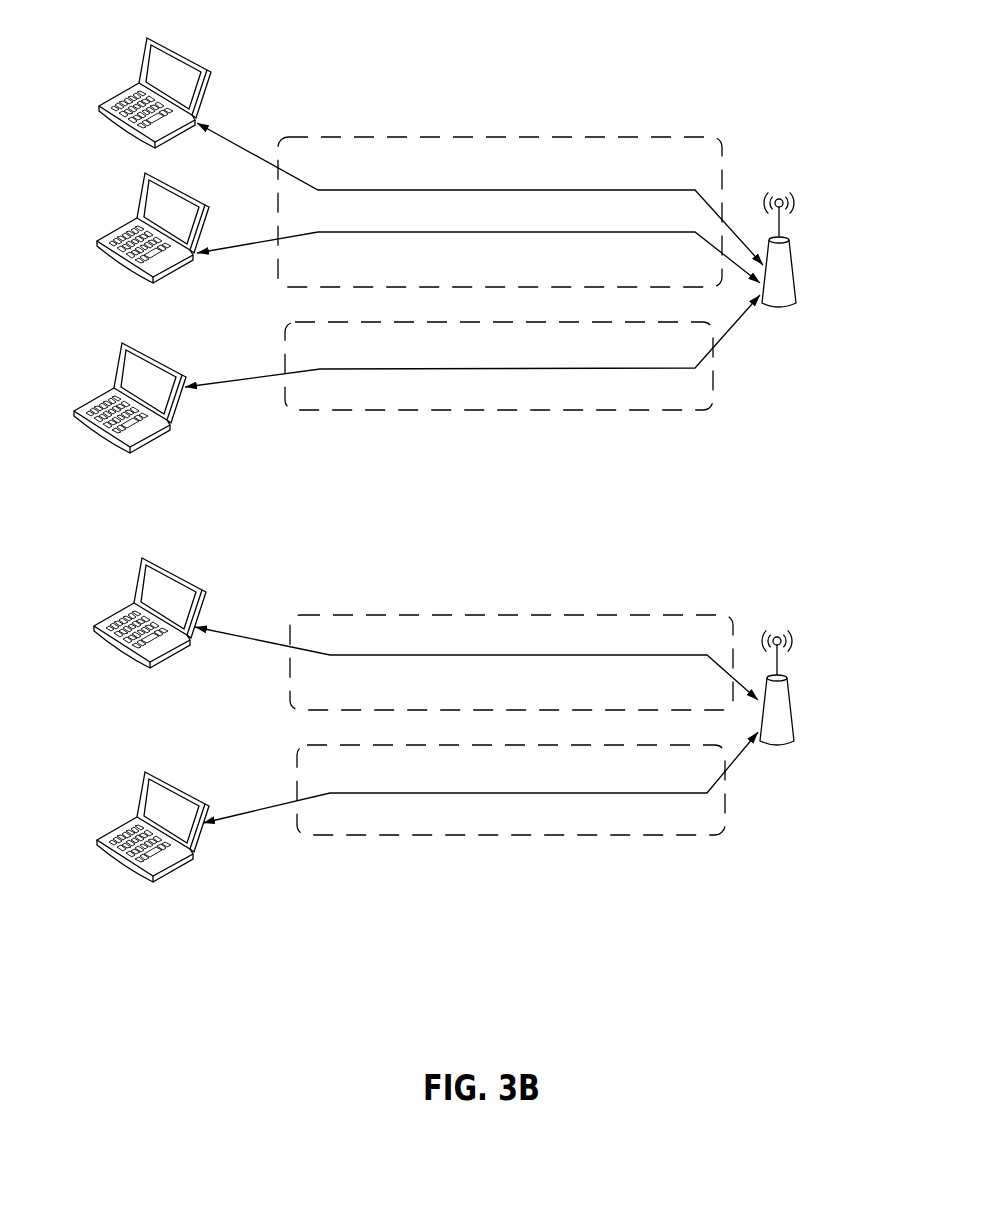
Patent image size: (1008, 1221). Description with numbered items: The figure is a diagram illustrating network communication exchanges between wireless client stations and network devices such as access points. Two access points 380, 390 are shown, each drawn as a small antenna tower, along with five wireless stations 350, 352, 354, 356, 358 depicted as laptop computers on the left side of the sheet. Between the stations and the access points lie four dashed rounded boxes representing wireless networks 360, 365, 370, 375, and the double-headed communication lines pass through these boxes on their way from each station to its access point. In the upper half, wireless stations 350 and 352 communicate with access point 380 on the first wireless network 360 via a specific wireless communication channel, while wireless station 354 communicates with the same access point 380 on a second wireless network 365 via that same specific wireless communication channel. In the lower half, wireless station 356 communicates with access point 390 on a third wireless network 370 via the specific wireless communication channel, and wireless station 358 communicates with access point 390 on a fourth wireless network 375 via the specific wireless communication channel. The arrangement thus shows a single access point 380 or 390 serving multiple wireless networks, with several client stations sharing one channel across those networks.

The wireless station 350 is at (112, 88).
The wireless station 352 is at (113, 228).
The wireless station 354 is at (115, 360).
The wireless station 356 is at (122, 605).
The wireless station 358 is at (125, 818).
The first wireless network 360 is at (437, 137).
The second wireless network 365 is at (450, 410).
The third wireless network 370 is at (428, 615).
The fourth wireless network 375 is at (460, 835).
The access point 380 is at (796, 280).
The access point 390 is at (790, 700).